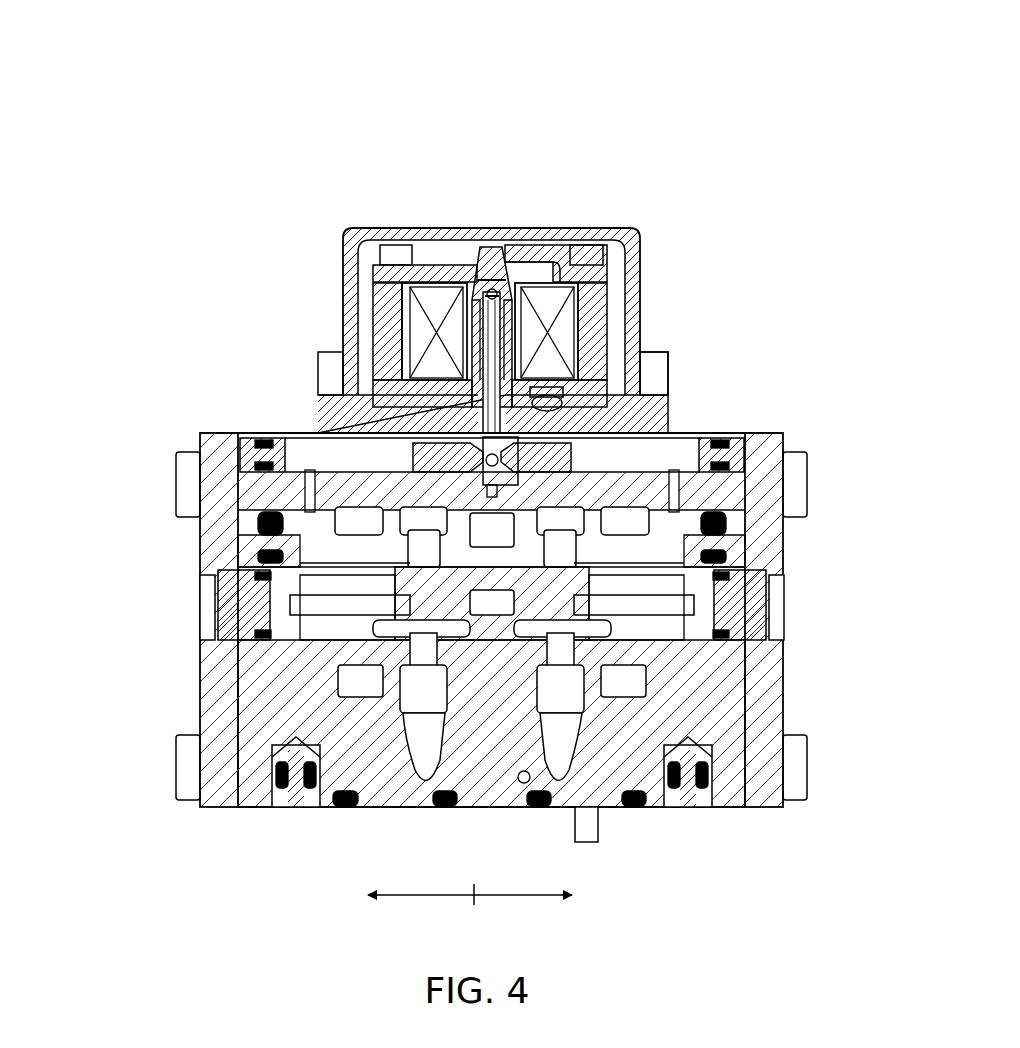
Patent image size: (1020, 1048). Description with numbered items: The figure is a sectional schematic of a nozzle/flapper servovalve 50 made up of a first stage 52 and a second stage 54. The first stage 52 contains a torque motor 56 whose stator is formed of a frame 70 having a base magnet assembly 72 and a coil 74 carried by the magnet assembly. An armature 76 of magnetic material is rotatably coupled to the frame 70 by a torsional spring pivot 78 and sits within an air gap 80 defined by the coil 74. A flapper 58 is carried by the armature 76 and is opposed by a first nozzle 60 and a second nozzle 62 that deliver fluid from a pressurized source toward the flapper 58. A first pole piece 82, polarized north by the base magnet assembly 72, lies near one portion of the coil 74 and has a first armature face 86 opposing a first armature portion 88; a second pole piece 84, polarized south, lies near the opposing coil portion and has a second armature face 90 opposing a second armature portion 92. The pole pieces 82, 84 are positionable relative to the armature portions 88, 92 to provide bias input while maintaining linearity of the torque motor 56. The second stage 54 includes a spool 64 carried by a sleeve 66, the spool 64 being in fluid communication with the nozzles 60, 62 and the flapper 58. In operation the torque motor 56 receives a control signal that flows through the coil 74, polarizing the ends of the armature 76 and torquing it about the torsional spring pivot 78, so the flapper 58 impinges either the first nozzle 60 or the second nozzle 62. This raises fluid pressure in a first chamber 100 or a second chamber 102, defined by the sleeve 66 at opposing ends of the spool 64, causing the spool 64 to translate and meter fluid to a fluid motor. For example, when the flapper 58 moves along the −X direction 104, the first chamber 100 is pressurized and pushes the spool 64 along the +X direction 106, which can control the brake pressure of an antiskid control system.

The servovalve 50 is at (642, 183).
The first stage 52 is at (690, 303).
The second stage 54 is at (186, 604).
The torque motor 56 is at (707, 363).
The flapper 58 is at (481, 469).
The first nozzle 60 is at (406, 446).
The second nozzle 62 is at (575, 452).
The spool 64 is at (632, 582).
The sleeve 66 is at (645, 538).
The frame 70 is at (372, 340).
The base magnet assembly 72 is at (398, 421).
The coil 74 is at (545, 288).
The armature 76 is at (483, 275).
The torsional spring pivot 78 is at (487, 293).
The air gap 80 is at (533, 275).
The first pole piece 82 is at (368, 268).
The second pole piece 84 is at (600, 256).
The first armature face 86 is at (473, 258).
The first armature portion 88 is at (482, 273).
The second armature face 90 is at (508, 258).
The second armature portion 92 is at (495, 248).
The first chamber 100 is at (323, 630).
The second chamber 102 is at (657, 632).
The −X direction 104 is at (407, 893).
The +X direction 106 is at (517, 893).